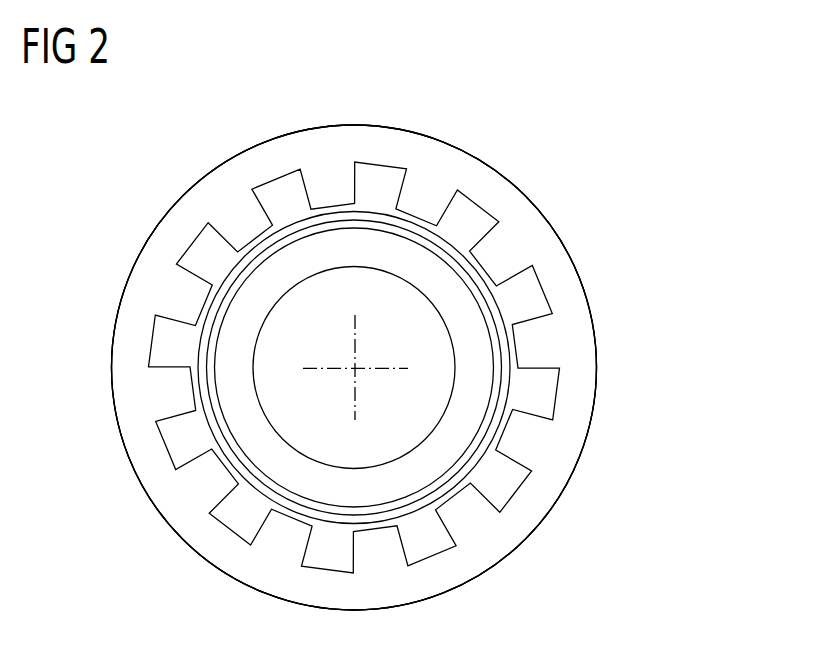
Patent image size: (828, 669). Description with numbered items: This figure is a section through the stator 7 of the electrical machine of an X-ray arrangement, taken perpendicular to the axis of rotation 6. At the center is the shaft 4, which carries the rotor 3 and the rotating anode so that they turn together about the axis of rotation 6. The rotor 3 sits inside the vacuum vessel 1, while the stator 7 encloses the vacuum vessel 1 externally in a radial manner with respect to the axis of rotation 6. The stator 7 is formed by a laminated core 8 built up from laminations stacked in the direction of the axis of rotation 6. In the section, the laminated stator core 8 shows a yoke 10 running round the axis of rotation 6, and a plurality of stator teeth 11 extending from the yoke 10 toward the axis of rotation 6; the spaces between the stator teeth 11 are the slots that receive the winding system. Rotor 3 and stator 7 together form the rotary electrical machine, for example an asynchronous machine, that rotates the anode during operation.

The vacuum vessel 1 is at (507, 345).
The rotor 3 is at (455, 432).
The shaft 4 is at (255, 388).
The axis of rotation 6 is at (355, 368).
The stator 7 is at (562, 167).
The laminated core 8 is at (135, 268).
The yoke 10 is at (570, 273).
The stator teeth 11 is at (332, 188).